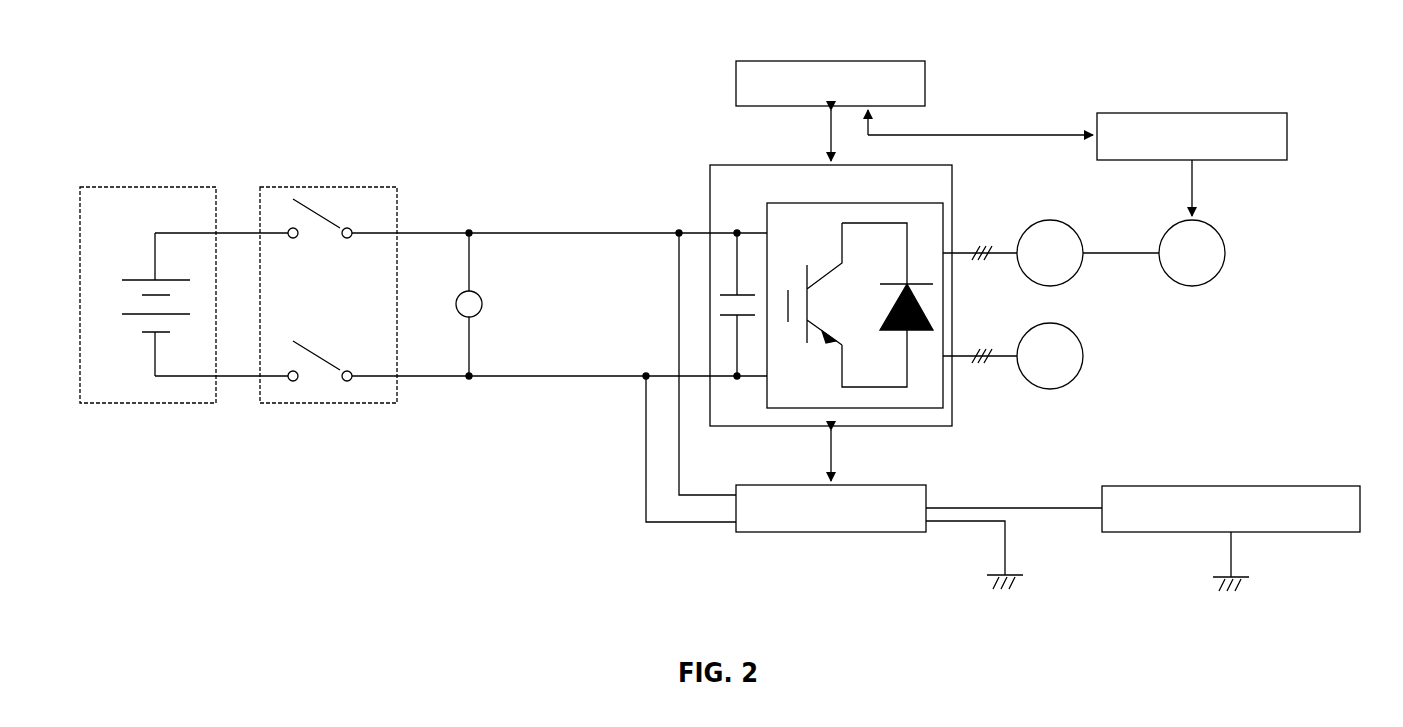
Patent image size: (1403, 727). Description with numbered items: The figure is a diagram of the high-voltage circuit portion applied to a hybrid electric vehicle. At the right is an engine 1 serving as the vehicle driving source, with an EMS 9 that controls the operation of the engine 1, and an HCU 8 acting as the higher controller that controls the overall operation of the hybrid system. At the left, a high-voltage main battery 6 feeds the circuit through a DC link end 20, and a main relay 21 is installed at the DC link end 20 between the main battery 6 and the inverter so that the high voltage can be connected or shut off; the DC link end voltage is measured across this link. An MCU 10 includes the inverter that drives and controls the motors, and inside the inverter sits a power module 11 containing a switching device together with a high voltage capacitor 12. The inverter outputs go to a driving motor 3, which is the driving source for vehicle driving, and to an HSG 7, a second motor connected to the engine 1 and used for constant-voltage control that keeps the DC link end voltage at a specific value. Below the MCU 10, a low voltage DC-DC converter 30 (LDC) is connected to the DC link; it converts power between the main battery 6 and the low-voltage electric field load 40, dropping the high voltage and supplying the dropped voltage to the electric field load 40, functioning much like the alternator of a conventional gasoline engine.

The engine 1 is at (1215, 283).
The driving motor 3 is at (1078, 378).
The main battery 6 is at (147, 187).
The HSG 7 is at (1075, 273).
The HCU 8 is at (736, 78).
The EMS 9 is at (1232, 113).
The MCU 10 is at (952, 398).
The power module 11 is at (918, 202).
The high voltage capacitor 12 is at (725, 295).
The DC link end 20 is at (540, 370).
The main relay 21 is at (335, 187).
The low voltage DC-DC converter 30 is at (880, 532).
The electric field load 40 is at (1258, 486).